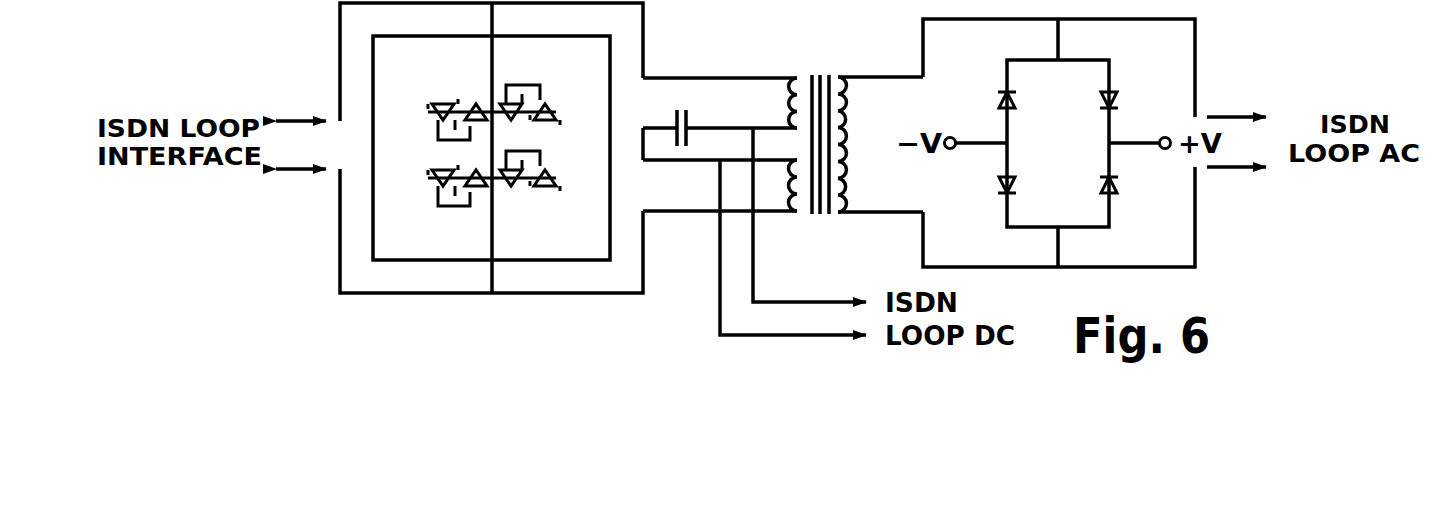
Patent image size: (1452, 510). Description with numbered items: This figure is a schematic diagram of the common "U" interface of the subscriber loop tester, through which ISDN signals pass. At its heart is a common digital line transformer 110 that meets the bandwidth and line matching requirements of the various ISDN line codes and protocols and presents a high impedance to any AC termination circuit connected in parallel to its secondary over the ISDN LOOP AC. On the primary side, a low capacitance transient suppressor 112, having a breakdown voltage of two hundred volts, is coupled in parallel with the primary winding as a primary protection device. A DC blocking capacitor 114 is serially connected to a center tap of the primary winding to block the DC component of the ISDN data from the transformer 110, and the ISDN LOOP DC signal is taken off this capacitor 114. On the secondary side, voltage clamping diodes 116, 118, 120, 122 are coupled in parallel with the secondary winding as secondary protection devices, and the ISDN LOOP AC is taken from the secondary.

The common digital line transformer 110 is at (836, 75).
The low capacitance transient suppressor 112 is at (643, 70).
The DC blocking capacitor 114 is at (688, 117).
The voltage clamping diode 116 is at (1000, 108).
The voltage clamping diode 118 is at (1115, 105).
The voltage clamping diode 120 is at (1000, 183).
The voltage clamping diode 122 is at (1115, 185).